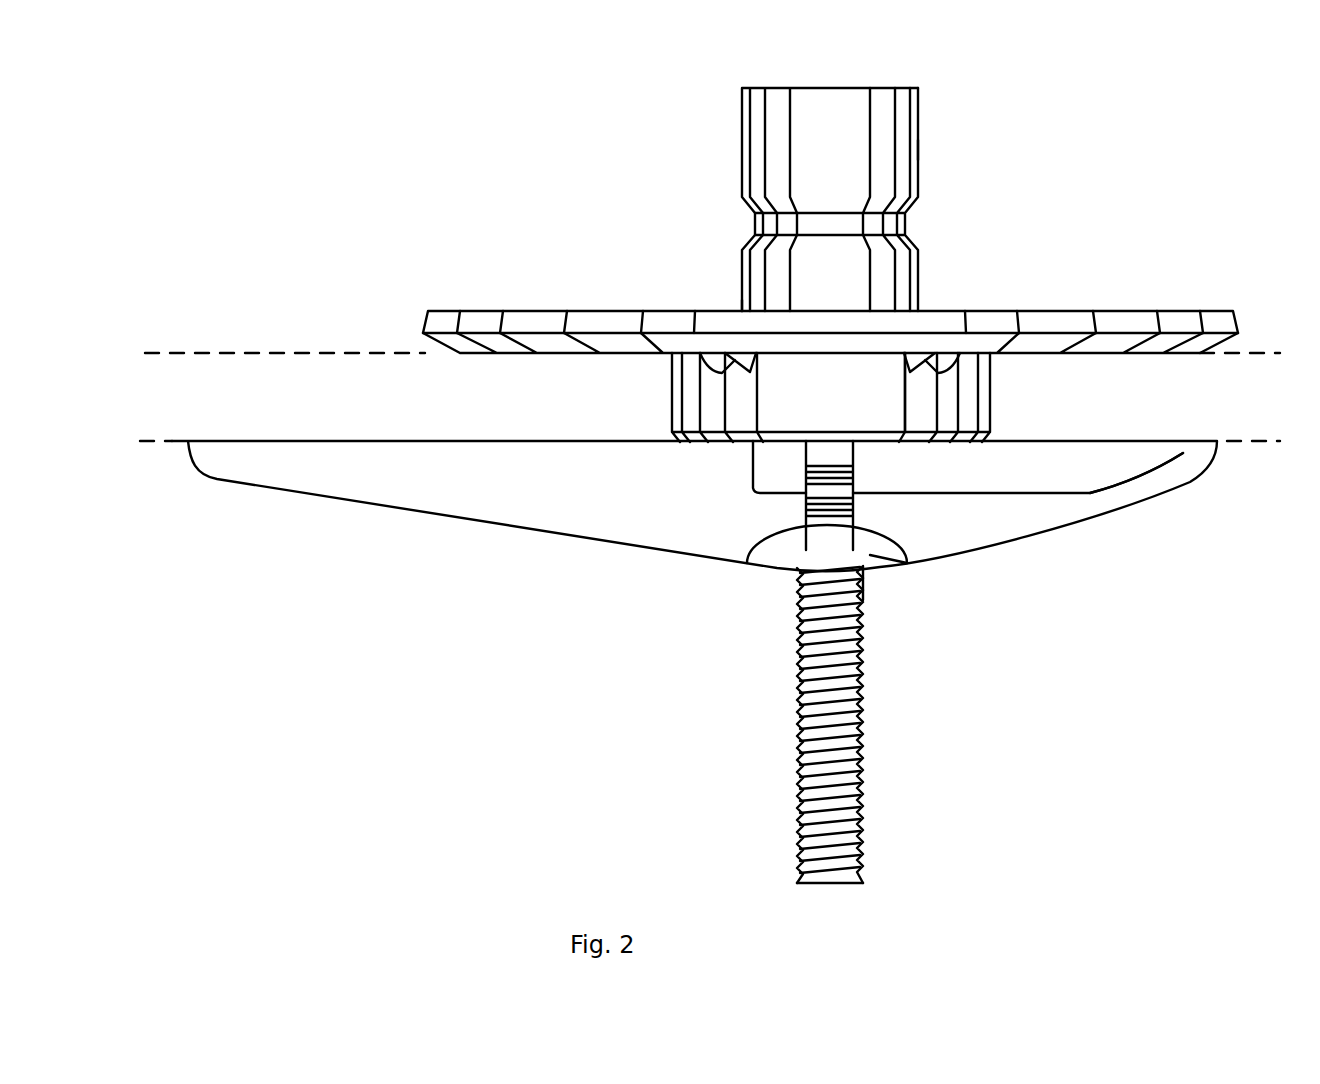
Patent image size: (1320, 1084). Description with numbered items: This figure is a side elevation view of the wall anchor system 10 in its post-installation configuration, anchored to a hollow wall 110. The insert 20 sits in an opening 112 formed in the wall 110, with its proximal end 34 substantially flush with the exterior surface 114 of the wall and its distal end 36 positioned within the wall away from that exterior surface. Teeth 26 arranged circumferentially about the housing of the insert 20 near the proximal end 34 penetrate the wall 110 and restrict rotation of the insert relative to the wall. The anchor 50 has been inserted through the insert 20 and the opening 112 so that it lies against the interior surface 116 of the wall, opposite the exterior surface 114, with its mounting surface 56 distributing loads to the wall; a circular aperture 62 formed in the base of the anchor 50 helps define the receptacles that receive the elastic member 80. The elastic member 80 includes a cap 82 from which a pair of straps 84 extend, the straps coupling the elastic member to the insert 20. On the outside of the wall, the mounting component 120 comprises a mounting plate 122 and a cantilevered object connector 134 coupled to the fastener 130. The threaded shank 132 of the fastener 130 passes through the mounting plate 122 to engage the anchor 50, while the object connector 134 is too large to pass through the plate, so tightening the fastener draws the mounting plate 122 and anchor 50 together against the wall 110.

The wall anchor system 10 is at (308, 560).
The insert 20 is at (1006, 400).
The teeth 26 is at (725, 372).
The proximal end 34 is at (905, 350).
The distal end 36 is at (977, 440).
The anchor 50 is at (446, 527).
The mounting surface 56 is at (475, 440).
The circular aperture 62 is at (880, 557).
The elastic member 80 is at (766, 580).
The cap 82 is at (880, 560).
The straps 84 is at (843, 458).
The wall 110 is at (190, 346).
The opening 112 is at (665, 420).
The exterior surface 114 is at (237, 352).
The interior surface 116 is at (160, 444).
The mounting component 120 is at (1038, 118).
The mounting plate 122 is at (1180, 310).
The fastener 130 is at (730, 183).
The threaded shank 132 is at (860, 727).
The object connector 134 is at (920, 147).